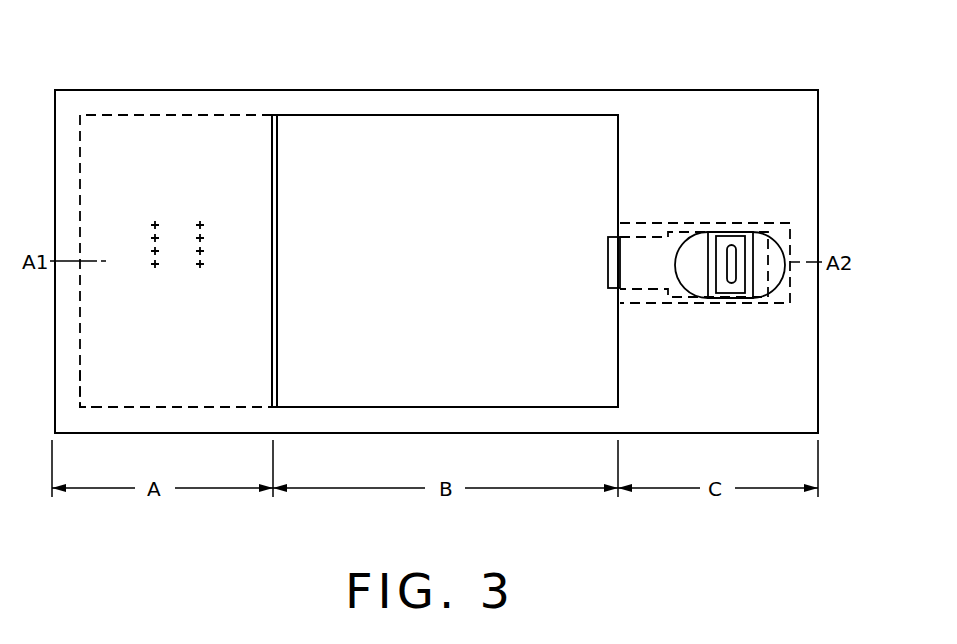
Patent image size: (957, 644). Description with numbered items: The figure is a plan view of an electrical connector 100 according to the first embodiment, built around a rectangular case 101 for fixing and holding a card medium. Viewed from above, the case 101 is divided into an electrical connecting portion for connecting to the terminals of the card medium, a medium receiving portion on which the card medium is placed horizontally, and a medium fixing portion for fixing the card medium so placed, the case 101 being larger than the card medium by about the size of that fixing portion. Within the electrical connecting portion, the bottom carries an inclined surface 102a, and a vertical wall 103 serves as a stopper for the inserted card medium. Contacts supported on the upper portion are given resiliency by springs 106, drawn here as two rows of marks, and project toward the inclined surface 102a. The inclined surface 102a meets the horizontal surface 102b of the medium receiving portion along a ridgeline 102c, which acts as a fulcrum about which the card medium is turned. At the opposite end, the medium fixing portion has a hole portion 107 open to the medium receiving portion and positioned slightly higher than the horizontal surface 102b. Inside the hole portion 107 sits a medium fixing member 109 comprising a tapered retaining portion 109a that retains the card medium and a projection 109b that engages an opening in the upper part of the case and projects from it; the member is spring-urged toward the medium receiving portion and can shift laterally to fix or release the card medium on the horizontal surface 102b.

The electrical connector 100 is at (826, 24).
The case 101 is at (690, 98).
The inclined surface 102a is at (198, 390).
The horizontal surface 102b is at (493, 392).
The ridgeline 102c is at (277, 376).
The vertical wall 103 is at (81, 363).
The springs 106 is at (154, 273).
The hole portion 107 is at (620, 231).
The medium fixing member 109 is at (748, 232).
The tapered retaining portion 109a is at (612, 262).
The projection 109b is at (737, 286).